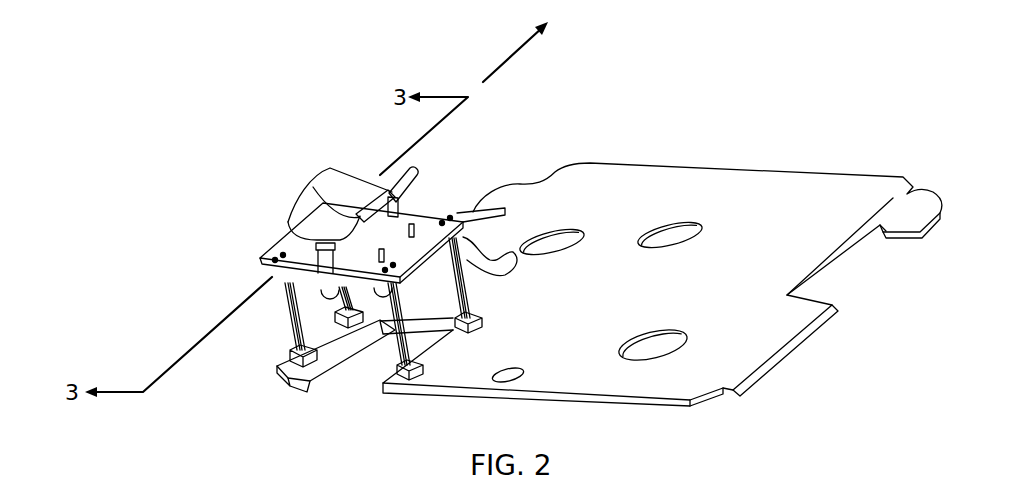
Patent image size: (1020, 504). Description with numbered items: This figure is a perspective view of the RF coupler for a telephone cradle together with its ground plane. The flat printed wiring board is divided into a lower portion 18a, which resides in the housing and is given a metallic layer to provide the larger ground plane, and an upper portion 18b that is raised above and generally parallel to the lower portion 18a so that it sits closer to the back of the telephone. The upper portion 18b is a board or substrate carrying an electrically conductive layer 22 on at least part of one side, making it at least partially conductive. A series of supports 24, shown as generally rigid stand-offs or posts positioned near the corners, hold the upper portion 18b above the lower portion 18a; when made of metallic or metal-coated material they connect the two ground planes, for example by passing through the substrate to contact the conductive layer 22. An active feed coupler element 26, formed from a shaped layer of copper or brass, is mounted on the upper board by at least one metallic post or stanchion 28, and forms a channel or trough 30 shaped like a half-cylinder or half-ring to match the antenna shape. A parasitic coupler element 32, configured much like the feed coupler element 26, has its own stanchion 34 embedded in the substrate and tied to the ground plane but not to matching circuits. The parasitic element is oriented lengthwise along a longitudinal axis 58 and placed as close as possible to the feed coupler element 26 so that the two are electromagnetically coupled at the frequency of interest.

The lower portion 18a is at (662, 284).
The upper portion 18b is at (470, 207).
The electrically conductive layer 22 is at (272, 270).
The supports 24 is at (290, 318).
The active feed coupler element 26 is at (337, 182).
The stanchion 28 is at (423, 217).
The channel or trough 30 is at (352, 186).
The parasitic coupler element 32 is at (310, 210).
The stanchion 34 is at (317, 250).
The longitudinal axis 58 is at (525, 46).